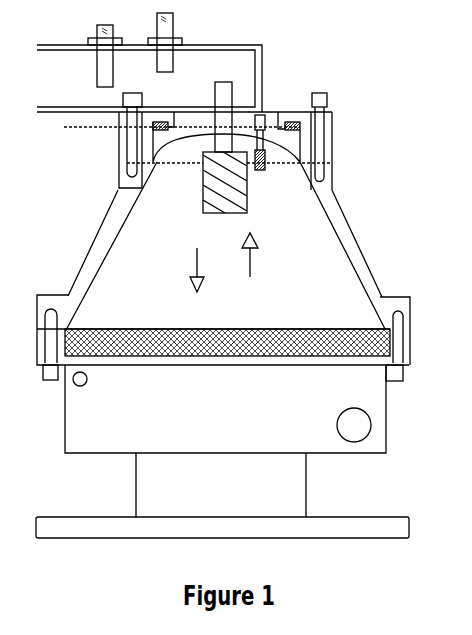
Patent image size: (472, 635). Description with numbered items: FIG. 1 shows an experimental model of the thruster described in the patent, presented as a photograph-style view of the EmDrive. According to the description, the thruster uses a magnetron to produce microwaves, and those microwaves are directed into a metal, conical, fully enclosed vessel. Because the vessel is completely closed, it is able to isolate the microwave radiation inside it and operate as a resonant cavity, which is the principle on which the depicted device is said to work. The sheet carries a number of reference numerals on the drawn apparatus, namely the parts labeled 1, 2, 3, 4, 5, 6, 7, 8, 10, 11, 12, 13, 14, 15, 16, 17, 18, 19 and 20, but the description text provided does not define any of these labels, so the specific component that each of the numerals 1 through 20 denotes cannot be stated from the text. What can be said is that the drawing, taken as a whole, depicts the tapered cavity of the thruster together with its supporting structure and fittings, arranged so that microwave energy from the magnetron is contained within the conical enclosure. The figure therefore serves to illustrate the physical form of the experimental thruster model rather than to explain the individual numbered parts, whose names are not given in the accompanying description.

The pressing device 1 is at (332, 117).
The frame leg 2 is at (337, 218).
The side bracket 3 is at (406, 343).
The work platform 4 is at (364, 342).
The support leg 5 is at (118, 238).
The platform top plate 6 is at (110, 329).
The base box 7 is at (368, 397).
The through hole 8 is at (76, 384).
The support column 10 is at (147, 487).
The base plate 11 is at (75, 523).
The arc cover 12 is at (162, 143).
The mounting plate 13 is at (175, 127).
The bolt 14 is at (58, 47).
The bolt 15 is at (167, 28).
The push rod 16 is at (228, 85).
The pressing block 17 is at (218, 185).
The downward direction arrow 18 is at (192, 278).
The upward direction arrow 19 is at (258, 247).
The sensor 20 is at (259, 160).